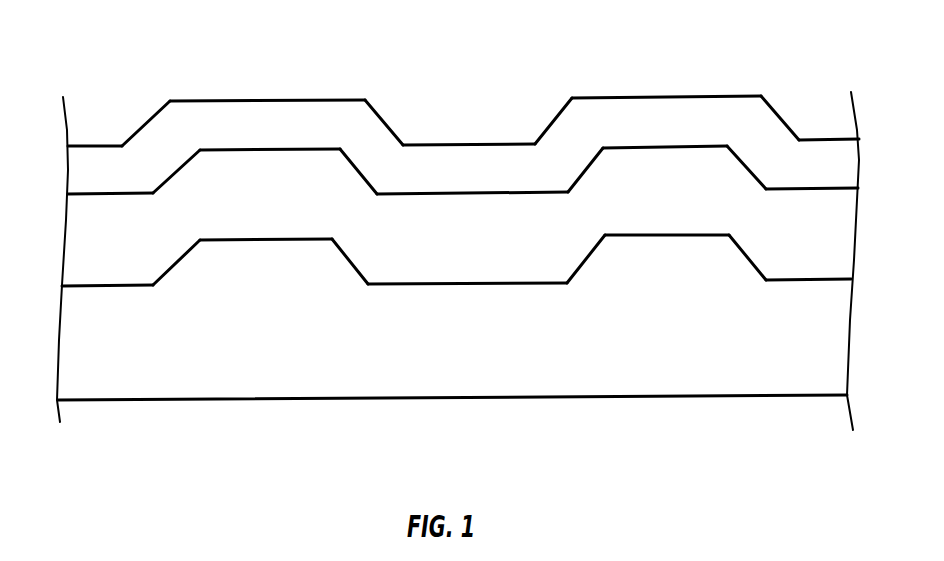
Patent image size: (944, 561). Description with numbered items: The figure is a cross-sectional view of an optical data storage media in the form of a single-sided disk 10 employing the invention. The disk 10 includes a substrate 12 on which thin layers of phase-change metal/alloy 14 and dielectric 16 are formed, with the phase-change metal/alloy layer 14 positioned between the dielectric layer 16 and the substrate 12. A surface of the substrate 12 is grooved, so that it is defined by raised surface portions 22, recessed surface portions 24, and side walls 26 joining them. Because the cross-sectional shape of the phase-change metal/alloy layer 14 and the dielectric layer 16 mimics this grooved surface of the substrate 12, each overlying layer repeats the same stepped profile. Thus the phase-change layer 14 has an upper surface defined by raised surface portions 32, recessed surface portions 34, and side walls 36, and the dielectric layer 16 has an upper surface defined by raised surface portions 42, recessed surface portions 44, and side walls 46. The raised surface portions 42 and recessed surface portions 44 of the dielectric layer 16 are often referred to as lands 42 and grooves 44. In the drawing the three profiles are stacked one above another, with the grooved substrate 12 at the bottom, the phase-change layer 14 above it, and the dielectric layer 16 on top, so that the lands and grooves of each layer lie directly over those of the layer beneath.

The optical data storage disk 10 is at (53, 27).
The substrate 12 is at (486, 342).
The phase-change metal/alloy layer 14 is at (456, 241).
The dielectric layer 16 is at (463, 153).
The raised surface portions 22 is at (486, 248).
The recessed surface portions 24 is at (456, 265).
The side walls 26 is at (460, 250).
The raised surface portions 32 is at (463, 131).
The recessed surface portions 34 is at (463, 174).
The side walls 36 is at (453, 164).
The raised surface portions 42 is at (465, 82).
The recessed surface portions 44 is at (448, 105).
The side walls 46 is at (462, 115).